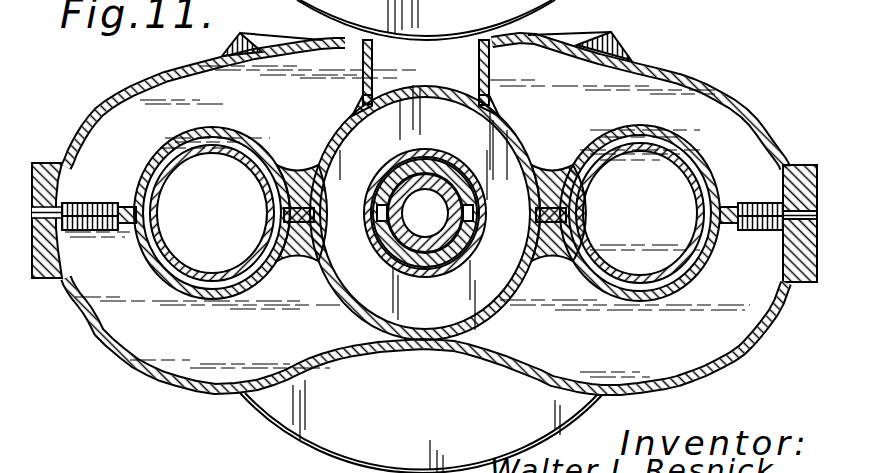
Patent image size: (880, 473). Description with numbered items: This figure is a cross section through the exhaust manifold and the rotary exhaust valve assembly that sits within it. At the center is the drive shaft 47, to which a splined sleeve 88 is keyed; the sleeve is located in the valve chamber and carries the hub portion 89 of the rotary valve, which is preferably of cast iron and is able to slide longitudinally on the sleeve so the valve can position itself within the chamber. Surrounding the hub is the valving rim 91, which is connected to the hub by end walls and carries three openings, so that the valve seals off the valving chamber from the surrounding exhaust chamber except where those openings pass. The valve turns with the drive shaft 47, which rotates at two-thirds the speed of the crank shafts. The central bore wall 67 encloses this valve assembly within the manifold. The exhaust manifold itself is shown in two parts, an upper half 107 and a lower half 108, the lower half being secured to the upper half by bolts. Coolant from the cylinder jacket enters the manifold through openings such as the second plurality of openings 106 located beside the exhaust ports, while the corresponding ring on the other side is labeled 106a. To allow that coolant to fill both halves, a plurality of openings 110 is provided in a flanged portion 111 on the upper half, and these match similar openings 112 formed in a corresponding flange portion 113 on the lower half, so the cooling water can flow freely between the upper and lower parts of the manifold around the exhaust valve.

The drive shaft 47 is at (448, 172).
The housing bore ring 67 is at (507, 163).
The splined sleeve 88 is at (400, 172).
The hub portion 89 is at (405, 151).
The valving rim 91 is at (385, 200).
The second plurality of openings 106 is at (176, 135).
The bearing ring 106a is at (668, 142).
The upper half 107 is at (708, 92).
The lower half 108 is at (720, 366).
The openings 110 is at (88, 203).
The flanged portion 111 is at (120, 193).
The openings 112 is at (92, 230).
The flange portion 113 is at (121, 224).